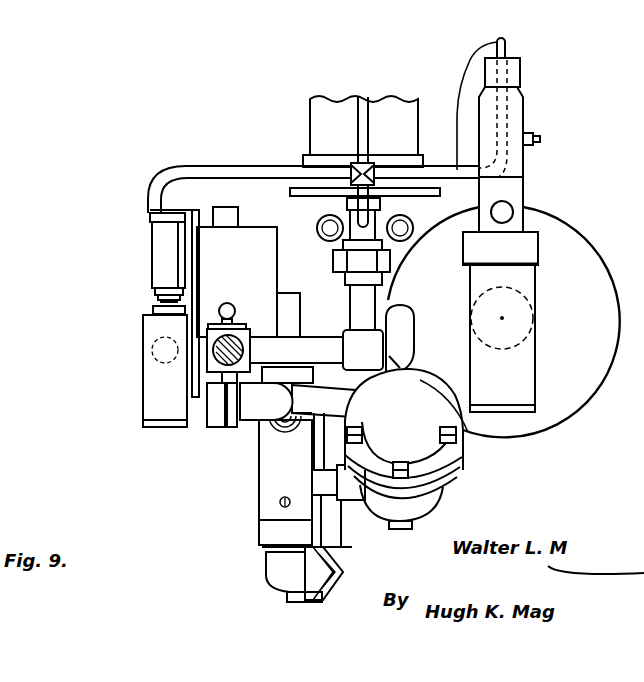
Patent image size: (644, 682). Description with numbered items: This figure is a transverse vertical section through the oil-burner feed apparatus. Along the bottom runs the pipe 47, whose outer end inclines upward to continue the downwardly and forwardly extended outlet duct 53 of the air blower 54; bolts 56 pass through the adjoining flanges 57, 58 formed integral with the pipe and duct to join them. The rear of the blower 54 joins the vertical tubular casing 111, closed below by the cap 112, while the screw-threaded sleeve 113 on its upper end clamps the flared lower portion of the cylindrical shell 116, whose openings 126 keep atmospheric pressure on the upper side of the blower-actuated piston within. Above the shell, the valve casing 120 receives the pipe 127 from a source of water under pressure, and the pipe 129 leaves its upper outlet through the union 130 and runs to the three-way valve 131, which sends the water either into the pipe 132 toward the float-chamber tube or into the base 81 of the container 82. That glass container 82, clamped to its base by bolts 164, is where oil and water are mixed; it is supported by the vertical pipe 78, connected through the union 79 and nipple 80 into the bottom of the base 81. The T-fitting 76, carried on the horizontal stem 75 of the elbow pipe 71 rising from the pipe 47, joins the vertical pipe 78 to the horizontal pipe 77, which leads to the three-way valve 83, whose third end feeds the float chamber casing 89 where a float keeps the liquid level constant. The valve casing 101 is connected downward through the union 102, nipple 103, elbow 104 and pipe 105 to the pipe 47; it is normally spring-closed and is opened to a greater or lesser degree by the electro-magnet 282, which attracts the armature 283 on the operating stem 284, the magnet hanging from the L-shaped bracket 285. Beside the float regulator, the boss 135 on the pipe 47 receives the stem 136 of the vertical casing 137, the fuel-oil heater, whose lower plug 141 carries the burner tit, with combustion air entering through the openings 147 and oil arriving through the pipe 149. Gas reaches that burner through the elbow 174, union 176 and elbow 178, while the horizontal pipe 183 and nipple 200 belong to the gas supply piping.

The pipe 47 is at (418, 509).
The outlet duct 53 is at (406, 419).
The air blower 54 is at (504, 322).
The bolts 56 is at (400, 462).
The flange 57 is at (427, 488).
The flange 58 is at (440, 469).
The elbow pipe 71 is at (403, 328).
The horizontal stem 75 is at (390, 356).
The T-fitting 76 is at (363, 350).
The horizontal pipe 77 is at (296, 360).
The vertical pipe 78 is at (363, 307).
The union 79 is at (340, 262).
The nipple 80 is at (350, 215).
The base 81 is at (317, 162).
The container 82 is at (364, 125).
The three-way valve 83 is at (240, 333).
The float chamber casing 89 is at (248, 272).
The valve casing 101 is at (152, 372).
The union 102 is at (213, 407).
The nipple 103 is at (237, 420).
The elbow 104 is at (266, 401).
The pipe 105 is at (330, 401).
The vertical tubular casing 111 is at (502, 335).
The cap 112 is at (478, 412).
The sleeve 113 is at (500, 248).
The cylindrical shell 116 is at (515, 190).
The valve casing 120 is at (520, 110).
The openings 126 is at (505, 215).
The pipe 127 is at (540, 138).
The pipe 129 is at (464, 106).
The union 130 is at (512, 72).
The three-way valve 131 is at (368, 165).
The pipe 132 is at (228, 171).
The boss 135 is at (345, 500).
The stem 136 is at (330, 498).
The cylindrical vertical casing 137 is at (270, 456).
The plug 141 is at (268, 531).
The openings 147 is at (280, 502).
The pipe 149 is at (291, 425).
The bolts 164 is at (378, 100).
The elbow 174 is at (336, 572).
The union 176 is at (310, 602).
The elbow 178 is at (280, 570).
The horizontal pipe 183 is at (309, 226).
The nipple 200 is at (420, 218).
The electro-magnet 282 is at (160, 238).
The armature 283 is at (152, 297).
The operating stem 284 is at (150, 308).
The L-shaped bracket 285 is at (160, 213).